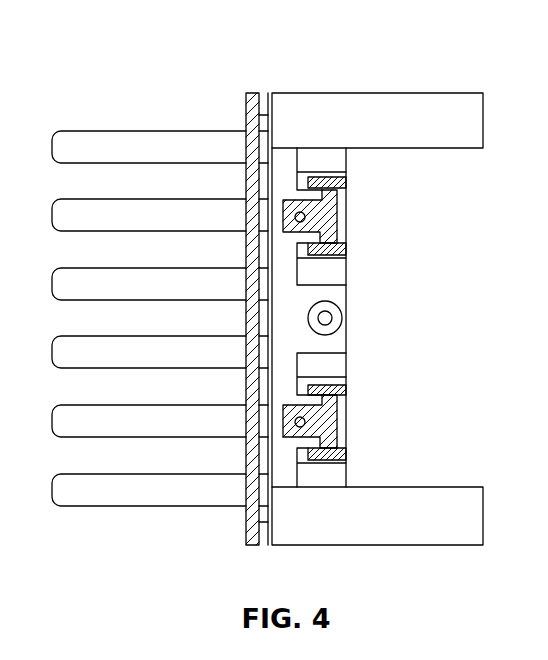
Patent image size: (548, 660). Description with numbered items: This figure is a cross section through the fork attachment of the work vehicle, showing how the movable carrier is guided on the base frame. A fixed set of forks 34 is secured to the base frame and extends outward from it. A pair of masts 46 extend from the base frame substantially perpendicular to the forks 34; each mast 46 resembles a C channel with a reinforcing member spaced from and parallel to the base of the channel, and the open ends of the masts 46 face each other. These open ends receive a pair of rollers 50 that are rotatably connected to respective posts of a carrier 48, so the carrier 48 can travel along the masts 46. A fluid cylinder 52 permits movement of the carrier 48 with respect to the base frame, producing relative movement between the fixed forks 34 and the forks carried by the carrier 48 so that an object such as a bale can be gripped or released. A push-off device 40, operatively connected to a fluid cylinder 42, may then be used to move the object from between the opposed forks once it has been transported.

The forks 34 is at (104, 508).
The push-off device 40 is at (252, 93).
The fluid cylinder 42 is at (448, 93).
The masts 46 is at (346, 160).
The carrier 48 is at (295, 200).
The rollers 50 is at (346, 199).
The fluid cylinder 52 is at (346, 346).